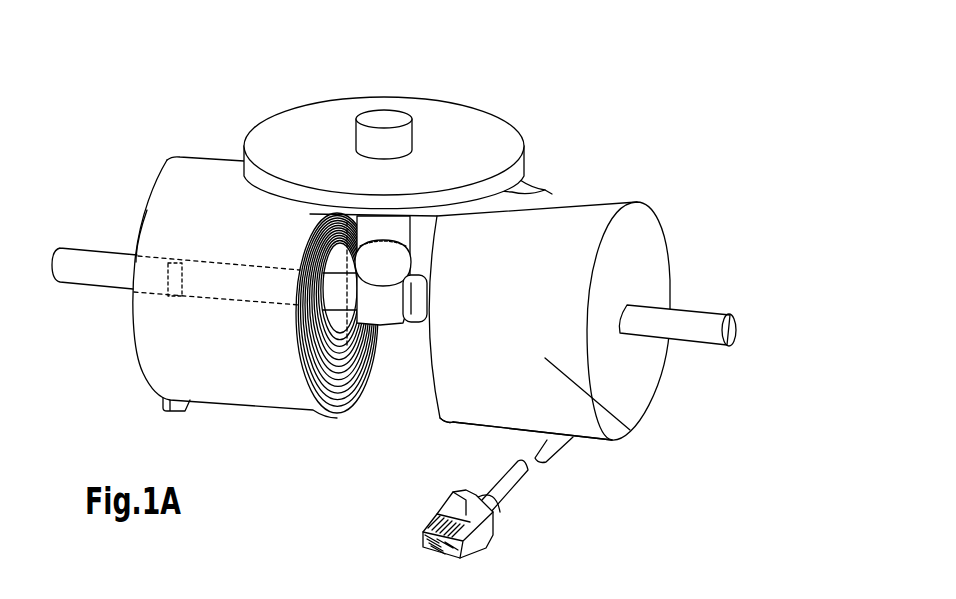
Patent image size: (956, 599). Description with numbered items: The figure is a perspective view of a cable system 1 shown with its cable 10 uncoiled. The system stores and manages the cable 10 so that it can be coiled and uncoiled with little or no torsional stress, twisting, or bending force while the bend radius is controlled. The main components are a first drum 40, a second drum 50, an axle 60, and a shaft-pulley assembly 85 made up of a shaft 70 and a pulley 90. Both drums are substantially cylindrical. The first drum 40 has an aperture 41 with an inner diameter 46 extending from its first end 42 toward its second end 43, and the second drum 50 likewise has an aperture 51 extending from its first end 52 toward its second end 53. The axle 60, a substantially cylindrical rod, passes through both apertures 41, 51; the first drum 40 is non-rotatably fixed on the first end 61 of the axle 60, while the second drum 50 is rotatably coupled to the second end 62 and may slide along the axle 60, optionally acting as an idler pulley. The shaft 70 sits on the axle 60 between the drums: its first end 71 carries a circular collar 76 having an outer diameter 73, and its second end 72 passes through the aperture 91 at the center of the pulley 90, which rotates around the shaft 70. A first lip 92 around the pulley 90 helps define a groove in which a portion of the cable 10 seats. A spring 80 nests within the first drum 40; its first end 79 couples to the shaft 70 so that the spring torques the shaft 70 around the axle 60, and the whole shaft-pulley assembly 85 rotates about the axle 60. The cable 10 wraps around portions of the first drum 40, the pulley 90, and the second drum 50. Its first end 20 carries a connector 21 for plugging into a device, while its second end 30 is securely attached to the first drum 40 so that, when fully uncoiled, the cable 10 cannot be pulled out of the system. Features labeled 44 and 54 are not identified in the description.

The cable system 1 is at (690, 105).
The cable 10 is at (510, 480).
The first end 20 is at (505, 512).
The connector 21 is at (430, 547).
The second end 30 is at (170, 408).
The first drum 40 is at (162, 312).
The aperture 41 is at (133, 292).
The first end 42 is at (173, 160).
The second end 43 is at (317, 413).
The housing body 44 is at (203, 248).
The inner diameter 46 is at (137, 253).
The second drum 50 is at (643, 233).
The aperture 51 is at (618, 335).
The first end 52 is at (440, 425).
The second end 53 is at (612, 440).
The shaft base 54 is at (630, 430).
The axle 60 is at (700, 333).
The first end 61 is at (58, 254).
The second end 62 is at (737, 322).
The shaft 70 is at (382, 114).
The first end 71 is at (383, 314).
The second end 72 is at (358, 116).
The outer diameter 73 is at (428, 343).
The collar 76 is at (413, 255).
The first end 79 is at (393, 260).
The spring 80 is at (342, 418).
The shaft-pulley assembly 85 is at (262, 81).
The pulley 90 is at (487, 130).
The aperture 91 is at (398, 157).
The first lip 92 is at (533, 188).